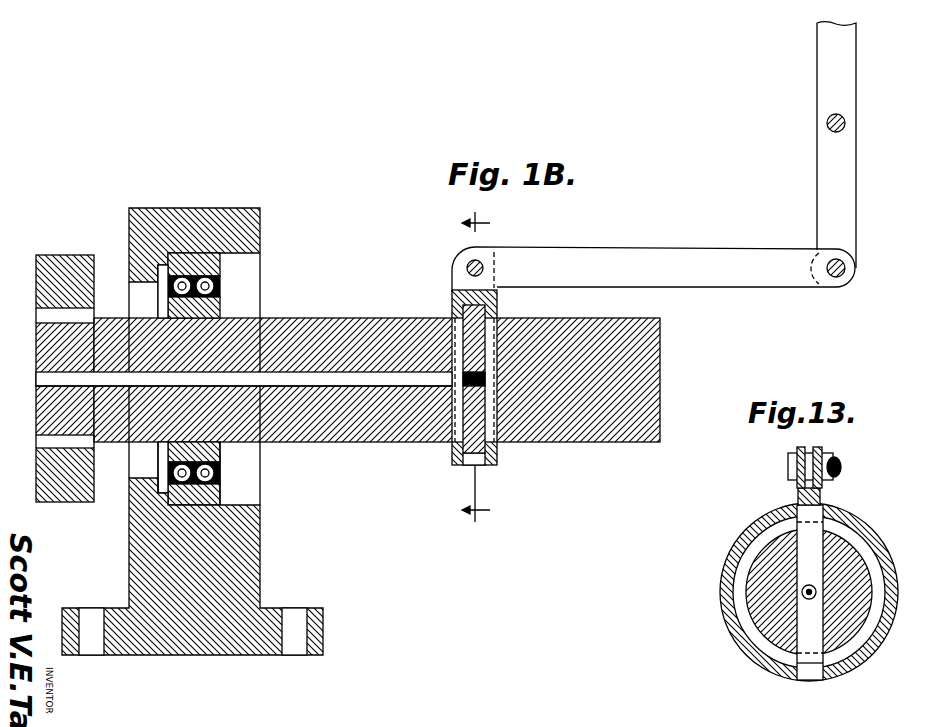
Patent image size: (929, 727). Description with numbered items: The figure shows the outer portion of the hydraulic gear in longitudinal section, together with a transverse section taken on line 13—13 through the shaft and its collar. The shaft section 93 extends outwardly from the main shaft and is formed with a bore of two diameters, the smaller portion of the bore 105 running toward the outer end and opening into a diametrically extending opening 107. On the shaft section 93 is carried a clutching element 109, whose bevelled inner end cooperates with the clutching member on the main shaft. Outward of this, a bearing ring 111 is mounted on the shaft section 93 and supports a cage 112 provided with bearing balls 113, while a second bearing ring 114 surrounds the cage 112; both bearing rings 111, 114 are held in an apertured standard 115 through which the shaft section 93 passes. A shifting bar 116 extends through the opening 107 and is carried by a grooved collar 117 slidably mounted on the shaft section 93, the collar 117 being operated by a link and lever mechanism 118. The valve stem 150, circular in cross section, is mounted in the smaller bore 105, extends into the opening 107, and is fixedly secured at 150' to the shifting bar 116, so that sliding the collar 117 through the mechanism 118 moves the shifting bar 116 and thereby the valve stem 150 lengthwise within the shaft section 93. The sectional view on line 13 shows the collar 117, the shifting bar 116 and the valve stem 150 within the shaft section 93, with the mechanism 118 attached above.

In FIG. 1B, the shaft section 93 is at (300, 335).
In FIG. 13, the shaft section 93 is at (765, 607).
In FIG. 1B, the smaller portion of the bore 105 is at (352, 392).
In FIG. 1B, the diametrically extending opening 107 is at (455, 445).
In FIG. 1B, the clutching element 109 is at (57, 275).
In FIG. 1B, the bearing ring 111 is at (212, 310).
In FIG. 1B, the cage 112 is at (222, 282).
In FIG. 1B, the bearing balls 113 is at (168, 283).
In FIG. 1B, the bearing ring 114 is at (187, 267).
In FIG. 1B, the apertured standard 115 is at (240, 590).
In FIG. 1B, the shifting bar 116 is at (483, 345).
In FIG. 13, the shifting bar 116 is at (807, 560).
In FIG. 1B, the grooved collar 117 is at (497, 290).
In FIG. 13, the grooved collar 117 is at (870, 530).
In FIG. 1B, the link and lever mechanism 118 is at (653, 272).
In FIG. 13, the link and lever mechanism 118 is at (815, 455).
In FIG. 1B, the valve stem 150 is at (244, 338).
In FIG. 13, the valve stem 150 is at (853, 629).
In FIG. 1B, the fixed securing point 150' is at (514, 392).
In FIG. 1B, the section line 13— 13 is at (476, 369).